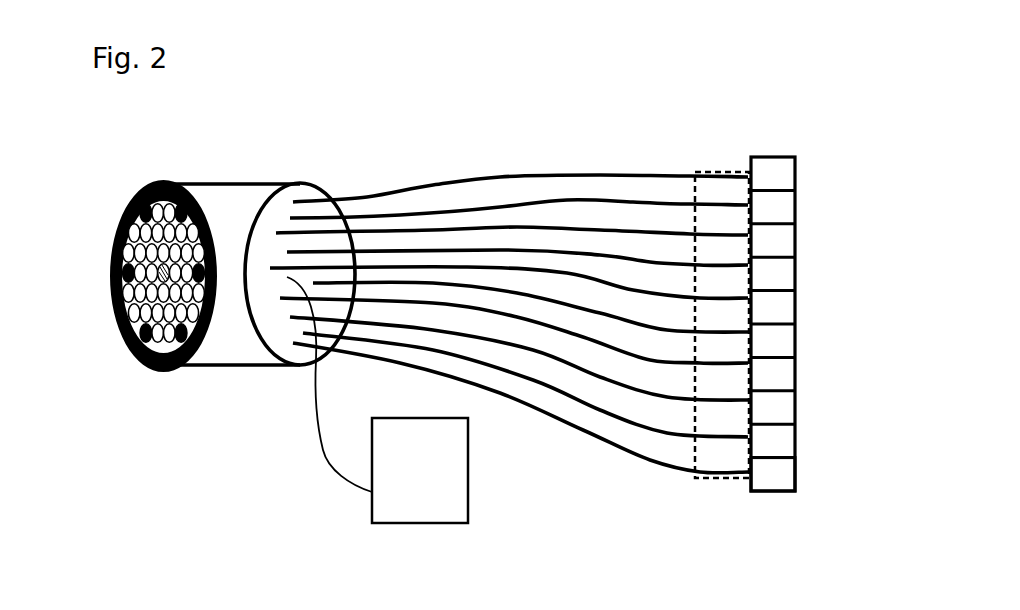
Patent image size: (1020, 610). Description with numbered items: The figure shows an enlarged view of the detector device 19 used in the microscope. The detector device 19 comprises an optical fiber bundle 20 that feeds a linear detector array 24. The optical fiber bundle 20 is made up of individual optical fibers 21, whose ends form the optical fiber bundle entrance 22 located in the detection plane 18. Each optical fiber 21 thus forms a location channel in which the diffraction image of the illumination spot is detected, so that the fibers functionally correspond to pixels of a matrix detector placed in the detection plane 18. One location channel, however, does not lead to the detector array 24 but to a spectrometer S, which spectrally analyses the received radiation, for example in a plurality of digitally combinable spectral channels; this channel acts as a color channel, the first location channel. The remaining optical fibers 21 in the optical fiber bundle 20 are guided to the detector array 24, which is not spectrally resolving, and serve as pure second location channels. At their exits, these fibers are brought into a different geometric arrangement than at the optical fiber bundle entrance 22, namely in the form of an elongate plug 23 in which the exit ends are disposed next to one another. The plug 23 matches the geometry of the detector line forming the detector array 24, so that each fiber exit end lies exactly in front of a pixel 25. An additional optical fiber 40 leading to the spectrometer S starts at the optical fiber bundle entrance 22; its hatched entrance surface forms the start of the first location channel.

The detection plane 18 is at (163, 372).
The detector device 19 is at (448, 139).
The optical fiber bundle 20 is at (240, 200).
The optical fibers 21 is at (363, 198).
The optical fiber bundle entrance 22 is at (110, 225).
The elongate plug 23 is at (693, 192).
The detector array 24 is at (777, 157).
The pixel 25 is at (770, 478).
The optical fiber 40 is at (120, 317).
The spectrometer S is at (468, 505).